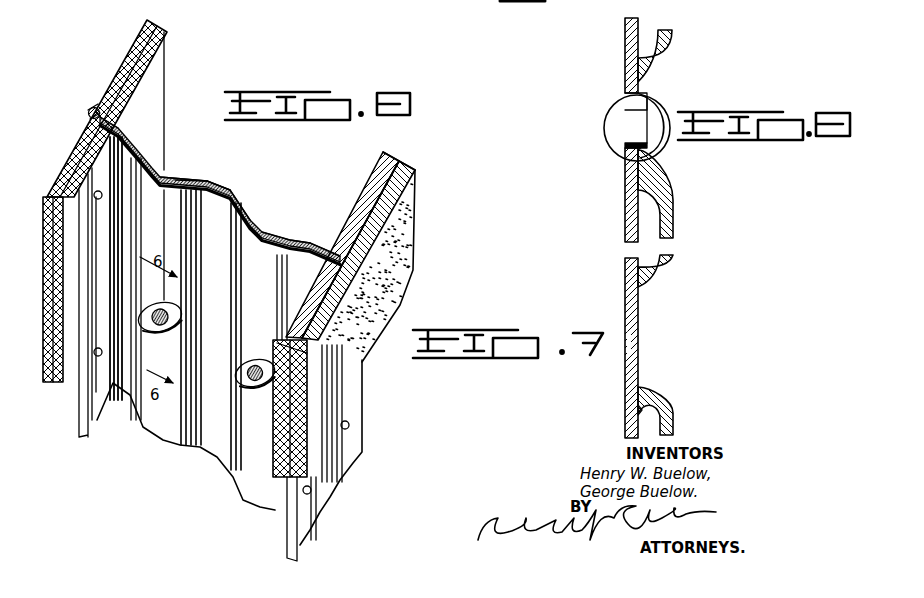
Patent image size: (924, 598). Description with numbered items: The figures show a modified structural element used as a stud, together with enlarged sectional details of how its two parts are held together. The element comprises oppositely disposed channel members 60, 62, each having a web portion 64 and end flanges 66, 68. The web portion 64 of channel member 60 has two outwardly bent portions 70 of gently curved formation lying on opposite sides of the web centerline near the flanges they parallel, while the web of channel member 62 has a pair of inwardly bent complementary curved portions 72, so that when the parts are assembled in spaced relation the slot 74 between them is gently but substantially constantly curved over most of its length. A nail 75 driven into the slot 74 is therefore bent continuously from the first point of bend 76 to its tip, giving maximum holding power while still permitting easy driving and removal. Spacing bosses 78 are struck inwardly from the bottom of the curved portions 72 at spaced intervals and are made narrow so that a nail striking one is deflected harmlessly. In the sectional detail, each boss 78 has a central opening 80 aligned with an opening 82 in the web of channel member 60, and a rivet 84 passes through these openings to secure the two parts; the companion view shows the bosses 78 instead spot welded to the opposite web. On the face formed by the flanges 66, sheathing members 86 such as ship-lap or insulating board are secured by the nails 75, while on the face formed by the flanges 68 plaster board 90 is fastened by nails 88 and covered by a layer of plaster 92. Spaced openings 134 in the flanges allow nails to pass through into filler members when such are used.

In FIG. 5, the channel member 60 is at (236, 185).
In FIG. 6, the channel member 60 is at (624, 220).
In FIG. 7, the channel member 60 is at (624, 430).
In FIG. 5, the channel member 62 is at (213, 199).
In FIG. 6, the channel member 62 is at (676, 215).
In FIG. 7, the channel member 62 is at (676, 420).
In FIG. 5, the web portion 64 is at (240, 189).
In FIG. 6, the web portion 64 is at (625, 32).
In FIG. 7, the web portion 64 is at (625, 268).
In FIG. 5, the end flange 66 is at (145, 83).
In FIG. 5, the end flange 68 is at (358, 197).
In FIG. 5, the outwardly bent portion 70 is at (162, 172).
In FIG. 5, the inwardly bent complementary curved portion 72 is at (145, 200).
In FIG. 5, the slot 74 is at (209, 180).
In FIG. 5, the nail 75 is at (188, 176).
In FIG. 5, the first point of bend 76 is at (133, 133).
In FIG. 5, the spacing boss 78 is at (235, 372).
In FIG. 6, the spacing boss 78 is at (636, 63).
In FIG. 7, the spacing boss 78 is at (638, 413).
In FIG. 6, the central opening 80 is at (645, 110).
In FIG. 6, the opening 82 is at (628, 106).
In FIG. 6, the rivet 84 is at (613, 128).
In FIG. 5, the member 86 is at (122, 63).
In FIG. 5, the nail 88 is at (312, 238).
In FIG. 5, the plaster board 90 is at (390, 153).
In FIG. 5, the plaster 92 is at (413, 200).
In FIG. 5, the opening 134 is at (96, 365).